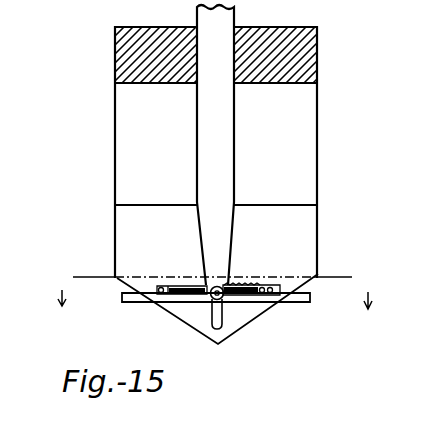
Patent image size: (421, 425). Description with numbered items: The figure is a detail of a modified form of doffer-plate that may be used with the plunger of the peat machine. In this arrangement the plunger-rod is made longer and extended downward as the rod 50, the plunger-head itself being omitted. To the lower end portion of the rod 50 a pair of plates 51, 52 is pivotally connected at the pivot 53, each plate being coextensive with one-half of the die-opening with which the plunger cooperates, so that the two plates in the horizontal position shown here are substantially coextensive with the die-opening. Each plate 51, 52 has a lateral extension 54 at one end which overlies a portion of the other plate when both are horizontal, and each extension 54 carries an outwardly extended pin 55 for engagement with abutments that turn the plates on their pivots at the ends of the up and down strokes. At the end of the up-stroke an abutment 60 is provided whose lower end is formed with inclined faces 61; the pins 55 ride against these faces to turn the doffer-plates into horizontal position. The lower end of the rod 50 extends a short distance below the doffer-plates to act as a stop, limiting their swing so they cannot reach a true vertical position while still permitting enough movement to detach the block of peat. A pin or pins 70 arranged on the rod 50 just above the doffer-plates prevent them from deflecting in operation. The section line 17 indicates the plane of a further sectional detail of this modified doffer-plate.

The section line 17- 17 is at (214, 286).
The plunger-rod 50 is at (233, 190).
The doffer-plate 51 is at (275, 303).
The doffer-plate 52 is at (142, 303).
The pivot 53 is at (217, 320).
The lateral extension 54 is at (178, 286).
The pin 55 is at (155, 304).
The abutment 60 is at (310, 240).
The inclined faces 61 is at (250, 303).
The pin 70 is at (250, 284).